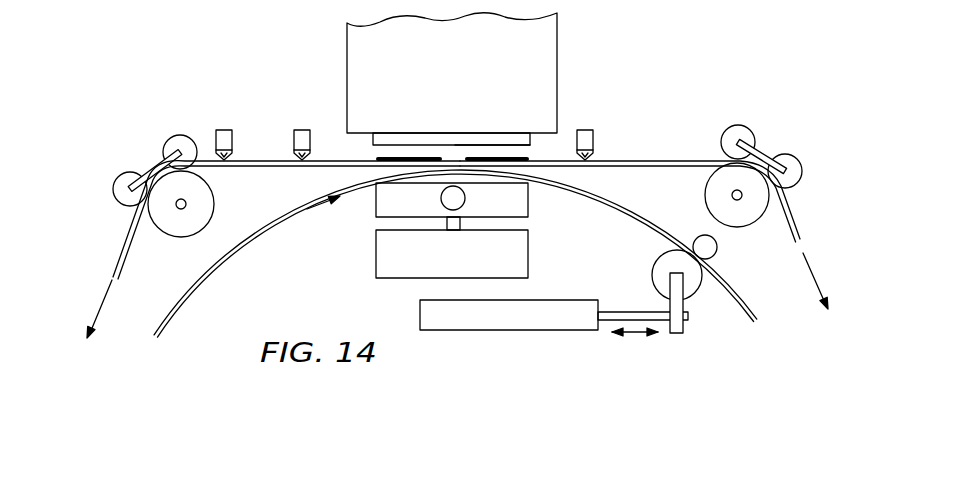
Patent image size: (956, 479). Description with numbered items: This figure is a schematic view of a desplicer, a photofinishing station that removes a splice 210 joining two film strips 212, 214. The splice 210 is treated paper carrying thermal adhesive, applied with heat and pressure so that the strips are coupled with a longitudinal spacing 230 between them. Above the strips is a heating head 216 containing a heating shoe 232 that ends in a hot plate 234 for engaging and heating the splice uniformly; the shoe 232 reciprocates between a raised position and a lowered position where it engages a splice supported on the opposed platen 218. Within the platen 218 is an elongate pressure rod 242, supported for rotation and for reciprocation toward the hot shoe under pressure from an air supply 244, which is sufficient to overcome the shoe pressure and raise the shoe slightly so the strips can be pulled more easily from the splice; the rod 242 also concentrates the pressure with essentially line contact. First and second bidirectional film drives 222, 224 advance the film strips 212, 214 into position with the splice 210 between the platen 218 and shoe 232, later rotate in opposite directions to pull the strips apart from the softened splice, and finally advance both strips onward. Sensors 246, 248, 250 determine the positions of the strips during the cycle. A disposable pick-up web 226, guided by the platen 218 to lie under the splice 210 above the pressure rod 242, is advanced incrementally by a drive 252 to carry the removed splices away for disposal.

The splice 210 is at (383, 157).
The film strip 212 is at (263, 160).
The film strip 214 is at (670, 160).
The heating head 216 is at (562, 40).
The platen 218 is at (551, 207).
The first film drive 222 is at (757, 236).
The second film drive 224 is at (161, 244).
The pick-up web 226 is at (230, 262).
The longitudinal spacing 230 is at (452, 167).
The heating shoe 232 is at (393, 137).
The hot plate 234 is at (506, 145).
The pressure rod 242 is at (446, 204).
The air supply 244 is at (529, 255).
The sensor 246 is at (223, 131).
The sensor 248 is at (302, 131).
The sensor 250 is at (597, 128).
The web drive 252 is at (712, 298).